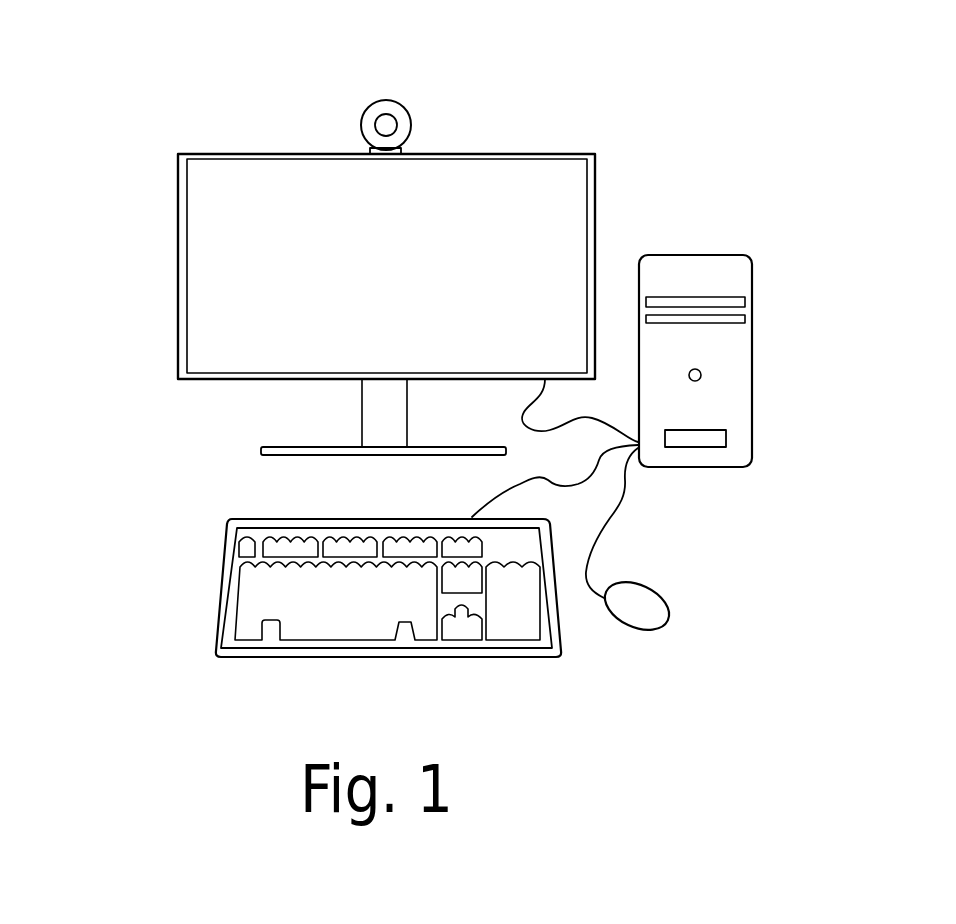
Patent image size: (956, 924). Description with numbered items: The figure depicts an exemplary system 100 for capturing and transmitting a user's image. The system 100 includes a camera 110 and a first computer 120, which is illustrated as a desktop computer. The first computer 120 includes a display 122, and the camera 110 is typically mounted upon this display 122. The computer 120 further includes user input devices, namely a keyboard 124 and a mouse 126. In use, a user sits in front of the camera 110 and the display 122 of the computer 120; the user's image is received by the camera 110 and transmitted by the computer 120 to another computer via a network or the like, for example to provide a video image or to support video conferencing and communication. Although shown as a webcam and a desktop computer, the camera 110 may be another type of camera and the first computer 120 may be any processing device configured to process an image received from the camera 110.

The system 100 is at (592, 56).
The camera 110 is at (365, 110).
The first computer 120 is at (695, 255).
The display 122 is at (178, 155).
The keyboard 124 is at (223, 563).
The mouse 126 is at (646, 584).